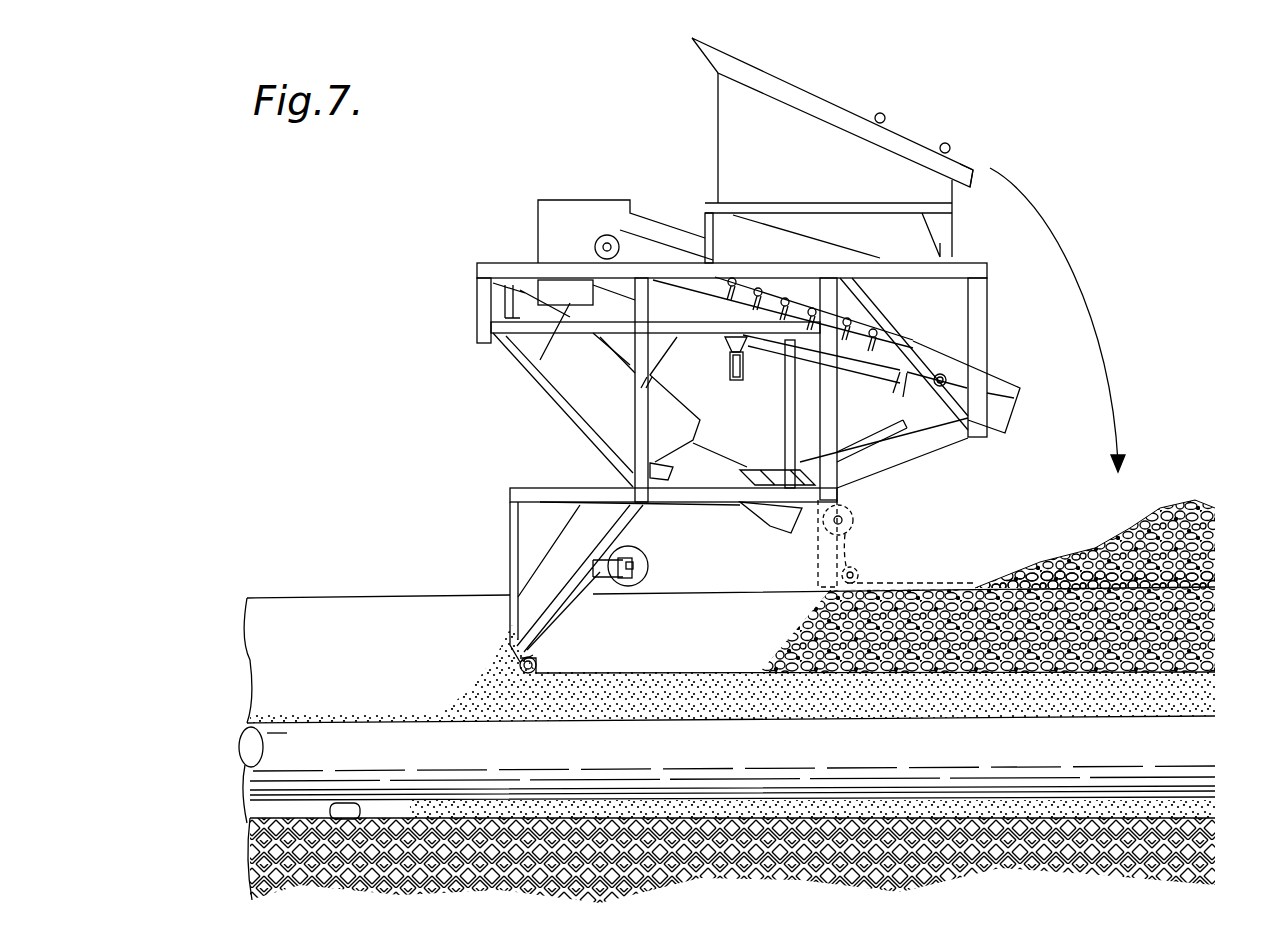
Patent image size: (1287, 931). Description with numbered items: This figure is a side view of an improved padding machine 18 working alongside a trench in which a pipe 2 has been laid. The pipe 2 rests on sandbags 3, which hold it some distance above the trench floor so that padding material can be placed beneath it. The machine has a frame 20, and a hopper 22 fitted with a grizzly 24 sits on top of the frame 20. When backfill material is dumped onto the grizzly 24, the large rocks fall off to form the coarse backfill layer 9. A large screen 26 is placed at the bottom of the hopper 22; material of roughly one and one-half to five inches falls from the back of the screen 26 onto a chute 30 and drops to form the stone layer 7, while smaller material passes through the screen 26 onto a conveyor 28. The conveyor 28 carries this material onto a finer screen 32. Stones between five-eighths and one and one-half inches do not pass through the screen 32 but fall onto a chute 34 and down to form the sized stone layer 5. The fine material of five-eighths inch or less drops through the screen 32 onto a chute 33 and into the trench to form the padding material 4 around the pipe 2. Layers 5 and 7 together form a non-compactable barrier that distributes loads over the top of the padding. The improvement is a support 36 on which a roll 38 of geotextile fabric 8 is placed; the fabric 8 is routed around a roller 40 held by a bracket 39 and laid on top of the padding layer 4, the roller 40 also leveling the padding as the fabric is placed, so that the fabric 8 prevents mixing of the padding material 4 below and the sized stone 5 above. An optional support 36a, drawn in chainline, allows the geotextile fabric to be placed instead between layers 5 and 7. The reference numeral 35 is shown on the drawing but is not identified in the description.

The pipe 2 is at (350, 747).
The sandbags 3 is at (330, 808).
The padding material 4 is at (1145, 688).
The layer of sized stone 5 is at (1217, 620).
The layer of stone 7 is at (1217, 576).
The geotextile fabric 8 is at (596, 613).
The coarse backfill layer 9 is at (1155, 520).
The padding machine 18 is at (470, 302).
The frame 20 is at (978, 320).
The hopper 22 is at (812, 169).
The grizzly 24 is at (974, 168).
The large screen 26 is at (893, 297).
The conveyor 28 is at (650, 244).
The chute 30 is at (1002, 385).
The screen 32 is at (612, 386).
The chute 33 is at (565, 521).
The chute 34 is at (770, 524).
The bottom edge 35 is at (688, 489).
The support 36 is at (600, 558).
The optional support 36a is at (818, 553).
The roll 38 is at (640, 558).
The bracket 39 is at (512, 650).
The roller 40 is at (538, 666).